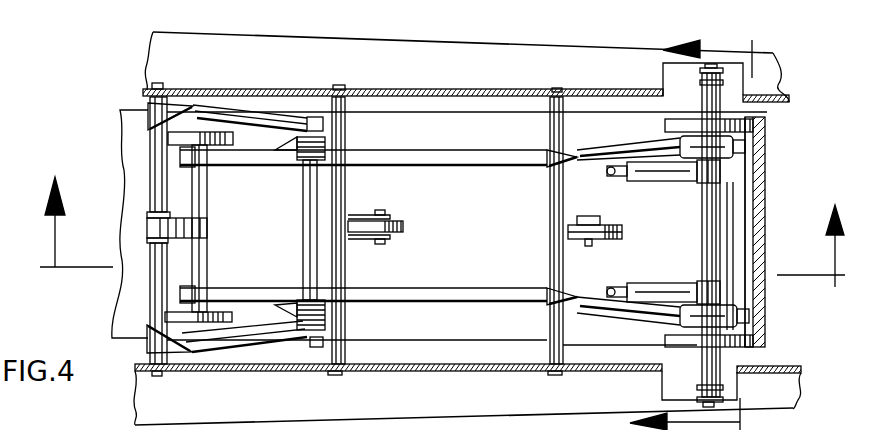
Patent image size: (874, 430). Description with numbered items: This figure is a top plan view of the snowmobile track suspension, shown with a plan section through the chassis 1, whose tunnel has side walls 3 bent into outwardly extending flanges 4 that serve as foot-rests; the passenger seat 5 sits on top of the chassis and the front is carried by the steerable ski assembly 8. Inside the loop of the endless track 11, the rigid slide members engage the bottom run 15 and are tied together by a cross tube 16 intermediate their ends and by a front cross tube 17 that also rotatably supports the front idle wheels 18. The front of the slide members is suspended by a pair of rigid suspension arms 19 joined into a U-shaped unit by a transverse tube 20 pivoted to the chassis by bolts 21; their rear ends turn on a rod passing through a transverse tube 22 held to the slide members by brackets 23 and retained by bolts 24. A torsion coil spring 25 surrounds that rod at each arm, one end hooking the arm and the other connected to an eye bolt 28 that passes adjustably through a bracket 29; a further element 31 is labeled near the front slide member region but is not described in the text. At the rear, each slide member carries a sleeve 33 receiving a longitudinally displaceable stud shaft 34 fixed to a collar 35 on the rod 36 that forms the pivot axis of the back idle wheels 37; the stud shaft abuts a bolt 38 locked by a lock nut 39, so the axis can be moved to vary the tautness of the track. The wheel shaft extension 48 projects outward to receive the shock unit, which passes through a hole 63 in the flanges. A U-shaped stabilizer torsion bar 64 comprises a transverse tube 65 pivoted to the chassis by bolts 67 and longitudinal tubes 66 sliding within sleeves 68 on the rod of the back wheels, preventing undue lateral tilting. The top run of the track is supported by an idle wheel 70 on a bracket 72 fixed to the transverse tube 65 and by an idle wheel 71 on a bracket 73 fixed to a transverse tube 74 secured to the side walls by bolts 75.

The chassis 1 is at (808, 369).
The side walls 3 is at (793, 103).
The flanges 4 is at (827, 415).
The passenger seat 5 is at (442, 248).
The steerable ski assembly 8 is at (714, 235).
The endless track 11 is at (767, 177).
The bottom run 15 is at (133, 131).
The cross tube 16 is at (540, 228).
The cross tube 17 is at (197, 275).
The front idle wheels 18 is at (146, 343).
The suspension arms 19 is at (233, 110).
The transverse tube 20 is at (147, 294).
The bolts 21 is at (162, 373).
The transverse tube 22 is at (307, 217).
The brackets 23 is at (300, 297).
The bolts 24 is at (332, 373).
The torsion coil spring 25 is at (327, 140).
The eye bolt 28 is at (258, 372).
The bracket 29 is at (268, 360).
The guide rack 31 is at (182, 216).
The sleeve 33 is at (668, 177).
The stud shaft 34 is at (700, 275).
The collar 35 is at (723, 295).
The rod 36 is at (765, 204).
The back idle wheels 37 is at (762, 133).
The bolt 38 is at (625, 313).
The lock nut 39 is at (680, 320).
The wheel shaft extension 48 is at (700, 367).
The hole 63 is at (690, 73).
The torsion bar 64 is at (540, 353).
The transverse tube 65 is at (547, 325).
The longitudinal tubes 66 is at (603, 147).
The bolts 67 is at (553, 376).
The sleeves 68 is at (732, 165).
The idle wheel 70 is at (624, 230).
The idle wheel 71 is at (405, 226).
The bracket 72 is at (580, 217).
The bracket 73 is at (357, 213).
The transverse tube 74 is at (343, 276).
The bolts 75 is at (333, 373).